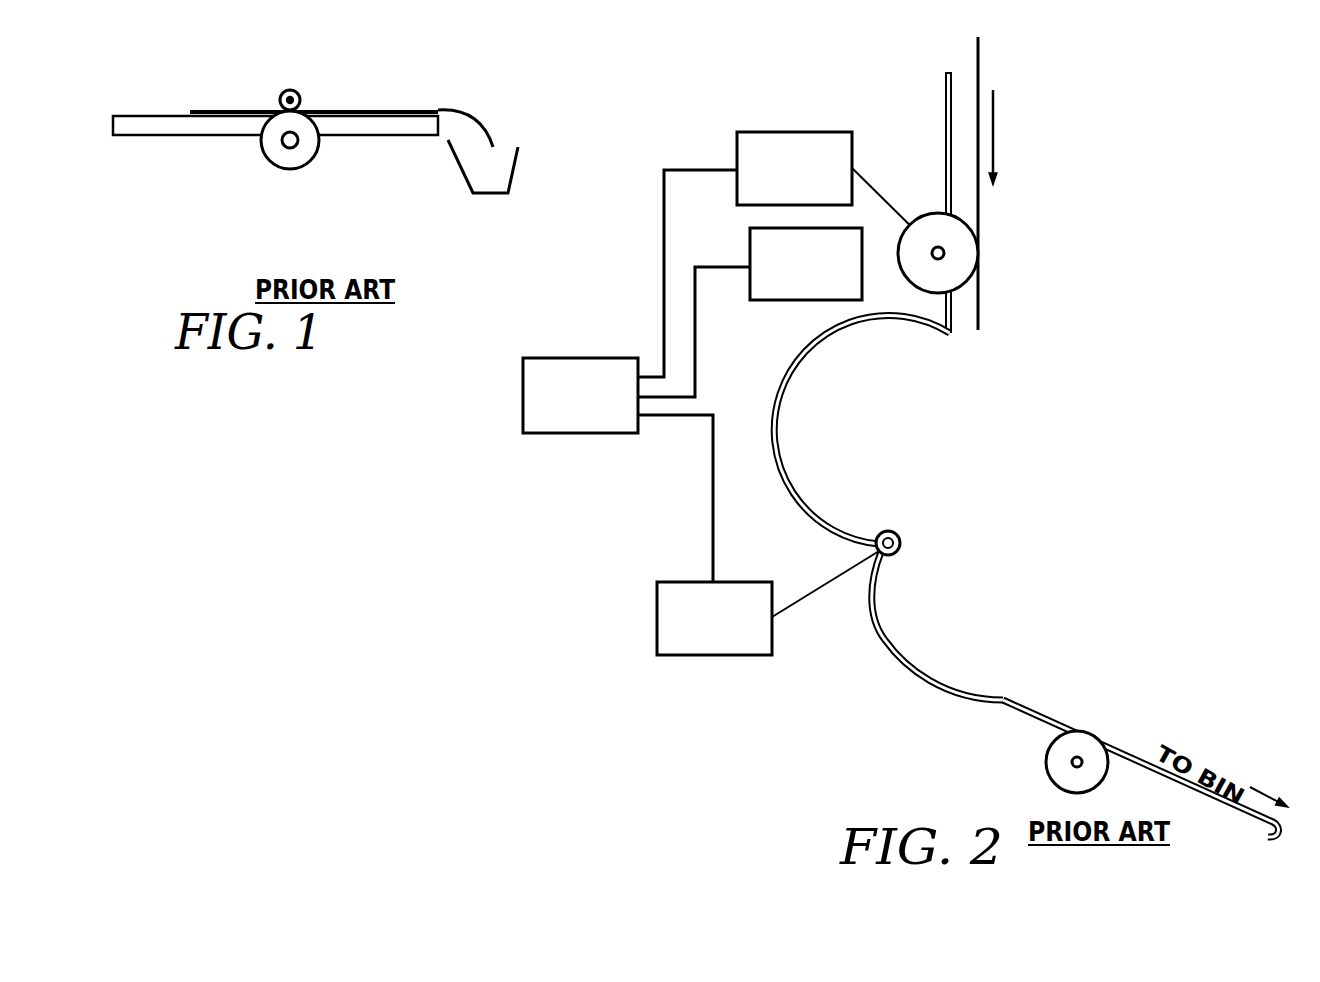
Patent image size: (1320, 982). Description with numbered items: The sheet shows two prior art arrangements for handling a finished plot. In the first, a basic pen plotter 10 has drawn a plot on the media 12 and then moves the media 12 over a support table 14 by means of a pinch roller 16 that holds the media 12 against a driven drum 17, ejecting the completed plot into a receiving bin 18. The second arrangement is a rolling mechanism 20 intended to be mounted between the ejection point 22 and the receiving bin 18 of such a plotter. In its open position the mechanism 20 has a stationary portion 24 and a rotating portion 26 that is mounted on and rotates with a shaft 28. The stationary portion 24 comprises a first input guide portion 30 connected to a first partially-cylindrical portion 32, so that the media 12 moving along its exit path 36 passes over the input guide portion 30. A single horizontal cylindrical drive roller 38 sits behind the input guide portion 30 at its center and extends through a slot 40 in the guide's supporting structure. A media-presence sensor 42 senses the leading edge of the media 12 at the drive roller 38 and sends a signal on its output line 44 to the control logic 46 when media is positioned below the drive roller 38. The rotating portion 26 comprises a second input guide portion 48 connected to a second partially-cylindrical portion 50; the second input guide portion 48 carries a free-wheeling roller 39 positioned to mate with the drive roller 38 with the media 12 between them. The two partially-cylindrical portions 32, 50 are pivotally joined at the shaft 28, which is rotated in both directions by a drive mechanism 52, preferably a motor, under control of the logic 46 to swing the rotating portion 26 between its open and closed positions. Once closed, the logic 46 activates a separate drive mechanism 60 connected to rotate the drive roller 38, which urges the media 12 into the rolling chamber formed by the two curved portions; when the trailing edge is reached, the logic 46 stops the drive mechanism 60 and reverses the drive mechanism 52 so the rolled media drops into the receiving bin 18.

In FIG. 1, the pen plotter 10 is at (217, 160).
In FIG. 1, the media 12 is at (473, 122).
In FIG. 2, the media 12 is at (980, 73).
In FIG. 1, the support table 14 is at (338, 137).
In FIG. 1, the pinch roller 16 is at (302, 100).
In FIG. 1, the driven drum 17 is at (297, 168).
In FIG. 1, the receiving bin 18 is at (515, 178).
In FIG. 2, the rolling mechanism 20 is at (1050, 367).
In FIG. 1, the ejection point 22 is at (422, 85).
In FIG. 2, the ejection point 22 is at (868, 48).
In FIG. 2, the stationary portion 24 is at (847, 437).
In FIG. 2, the rotating portion 26 is at (1014, 625).
In FIG. 2, the shaft 28 is at (897, 533).
In FIG. 2, the first input guide portion 30 is at (945, 125).
In FIG. 2, the first partially-cylindrical portion 32 is at (798, 373).
In FIG. 2, the exit path 36 is at (995, 137).
In FIG. 2, the drive roller 38 is at (980, 280).
In FIG. 2, the free-wheeling roller 39 is at (1046, 753).
In FIG. 2, the slot 40 is at (952, 210).
In FIG. 2, the media-presence sensor 42 is at (750, 250).
In FIG. 2, the output line 44 is at (697, 354).
In FIG. 2, the control logic 46 is at (582, 358).
In FIG. 2, the second input guide portion 48 is at (1033, 710).
In FIG. 2, the second partially-cylindrical portion 50 is at (888, 630).
In FIG. 2, the drive mechanism 52 is at (677, 582).
In FIG. 2, the drive mechanism 60 is at (782, 132).